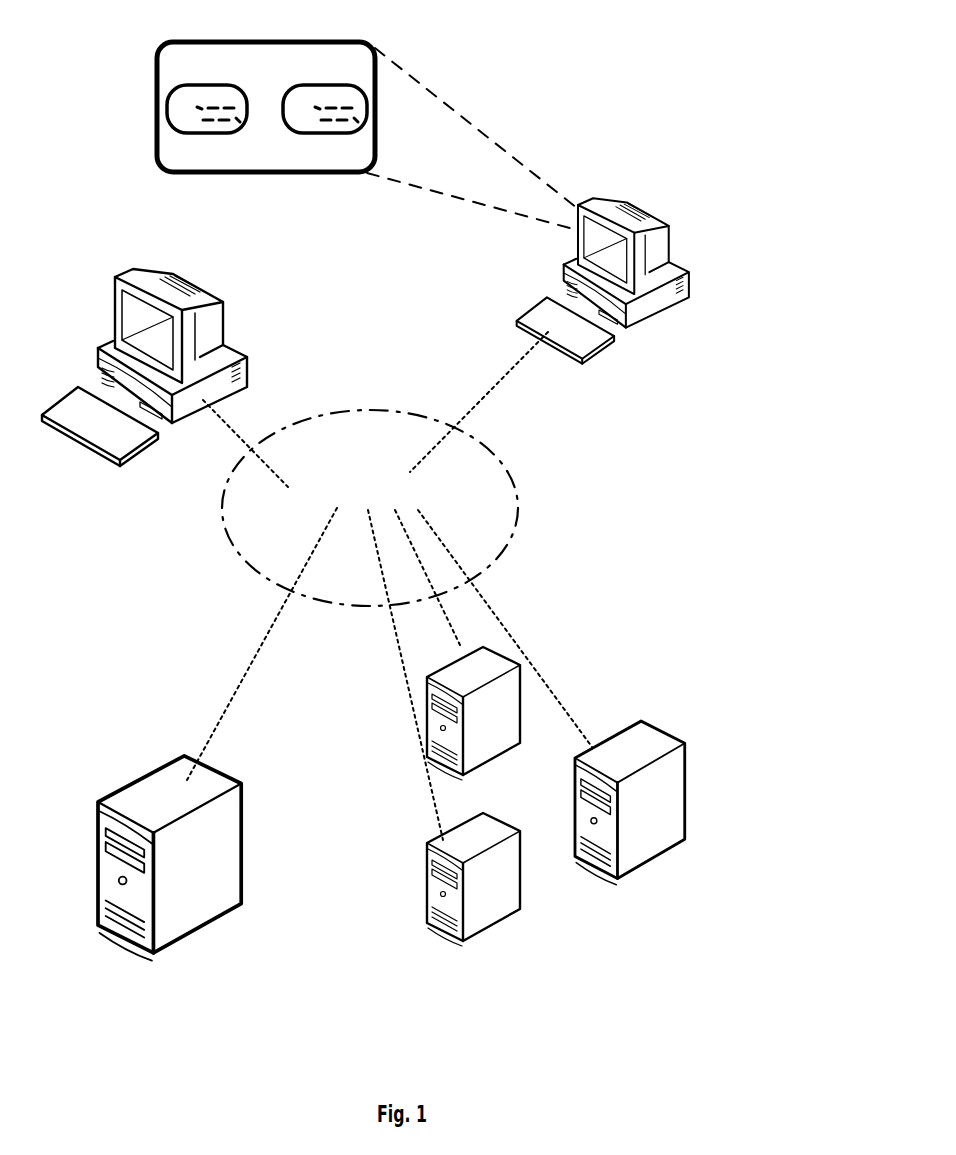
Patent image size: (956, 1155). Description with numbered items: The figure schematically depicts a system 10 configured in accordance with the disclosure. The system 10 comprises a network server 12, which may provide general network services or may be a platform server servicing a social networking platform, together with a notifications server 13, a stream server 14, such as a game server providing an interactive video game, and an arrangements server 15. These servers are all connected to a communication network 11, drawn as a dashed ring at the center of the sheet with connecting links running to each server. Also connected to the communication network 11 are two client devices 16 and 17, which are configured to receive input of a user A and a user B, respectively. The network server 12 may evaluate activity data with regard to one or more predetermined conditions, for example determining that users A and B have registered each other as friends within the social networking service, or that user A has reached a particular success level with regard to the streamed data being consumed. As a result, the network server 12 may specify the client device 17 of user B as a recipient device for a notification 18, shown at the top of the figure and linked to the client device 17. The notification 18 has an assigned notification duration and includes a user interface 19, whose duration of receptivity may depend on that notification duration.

The system 10 is at (618, 922).
The communication network 11 is at (478, 505).
The network server 12 is at (208, 867).
The notifications server 13 is at (483, 912).
The stream server 14 is at (483, 738).
The arrangements server 15 is at (640, 833).
The client device 16 is at (198, 342).
The client device 17 is at (688, 267).
The notification 18 is at (231, 90).
The user interface 19 is at (190, 108).